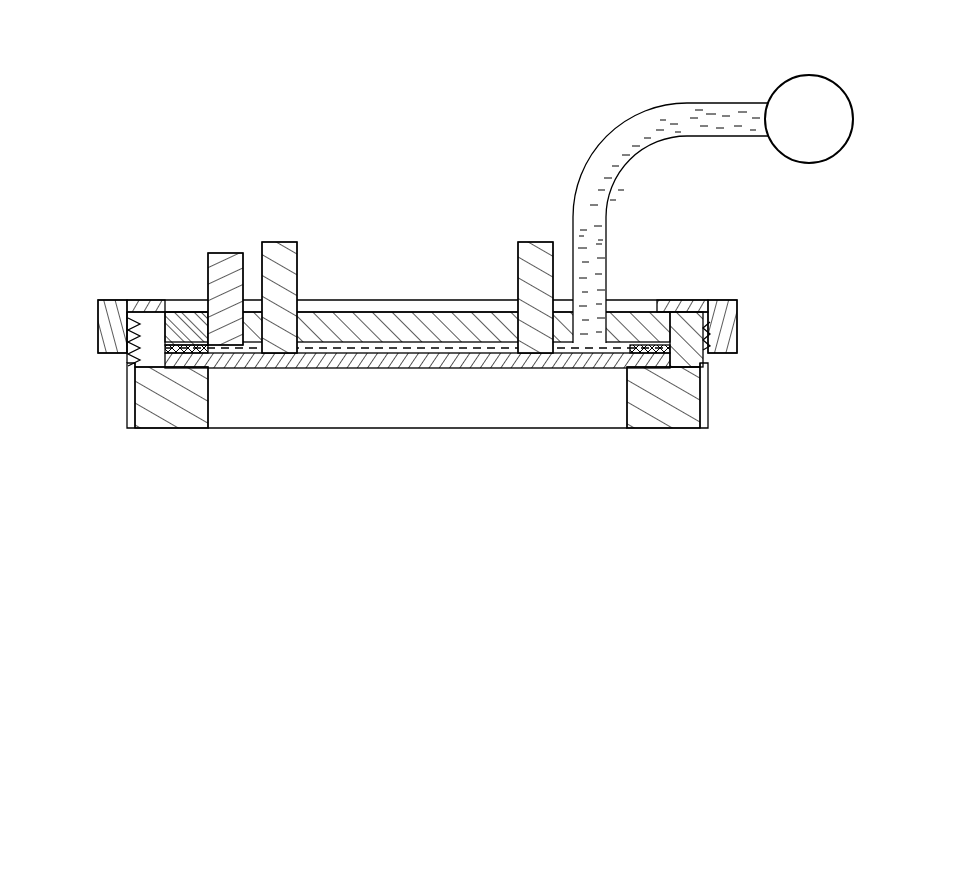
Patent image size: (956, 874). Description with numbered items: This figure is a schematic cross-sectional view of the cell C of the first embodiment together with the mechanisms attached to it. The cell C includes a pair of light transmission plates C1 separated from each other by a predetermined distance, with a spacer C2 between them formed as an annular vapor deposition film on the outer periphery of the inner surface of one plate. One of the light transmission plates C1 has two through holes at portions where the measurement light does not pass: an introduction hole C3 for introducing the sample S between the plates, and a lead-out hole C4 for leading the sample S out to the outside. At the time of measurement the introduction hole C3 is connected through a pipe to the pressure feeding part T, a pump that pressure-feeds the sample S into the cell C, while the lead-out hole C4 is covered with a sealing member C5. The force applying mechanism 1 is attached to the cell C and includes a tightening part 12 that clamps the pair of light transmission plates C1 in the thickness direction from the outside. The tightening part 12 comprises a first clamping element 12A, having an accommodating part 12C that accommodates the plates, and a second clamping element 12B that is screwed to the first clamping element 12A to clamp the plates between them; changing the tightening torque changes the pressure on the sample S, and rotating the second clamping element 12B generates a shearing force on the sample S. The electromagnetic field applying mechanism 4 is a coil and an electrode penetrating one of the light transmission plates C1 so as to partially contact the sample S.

The force applying mechanism 1 is at (862, 325).
The tightening part 12 is at (817, 318).
The first clamping element 12A is at (708, 395).
The second clamping element 12B is at (740, 320).
The accommodating part 12C is at (195, 372).
The cell C is at (273, 139).
The light transmission plates C1 is at (134, 328).
The spacer C2 is at (152, 350).
The introduction hole C3 is at (589, 336).
The lead-out hole C4 is at (184, 300).
The sealing member C5 is at (226, 253).
The sample S is at (414, 345).
The electromagnetic field applying mechanism 4 is at (281, 242).
The pressure feeding part T is at (861, 66).